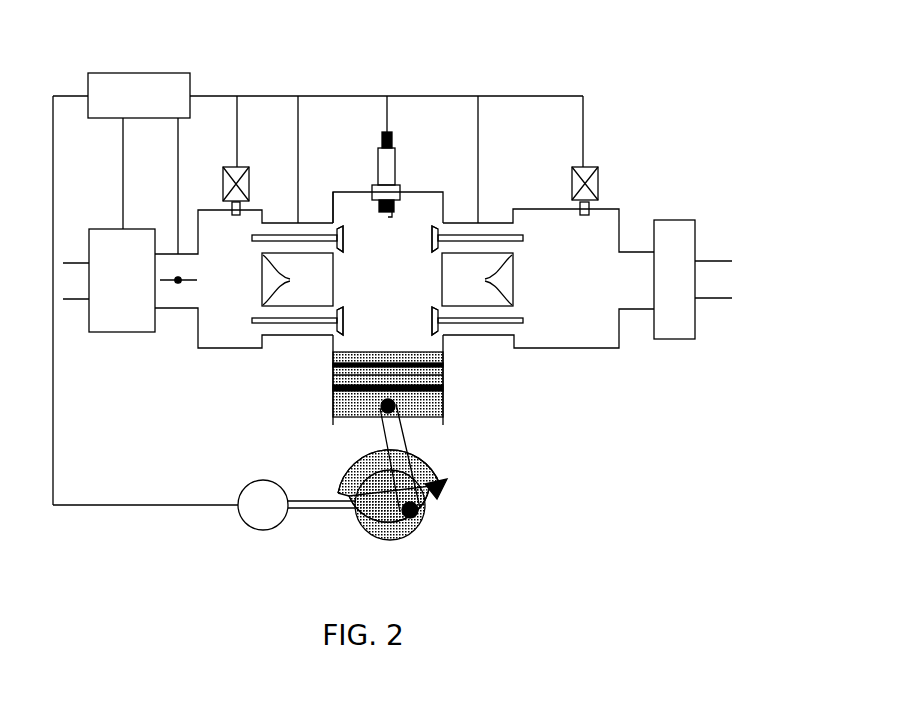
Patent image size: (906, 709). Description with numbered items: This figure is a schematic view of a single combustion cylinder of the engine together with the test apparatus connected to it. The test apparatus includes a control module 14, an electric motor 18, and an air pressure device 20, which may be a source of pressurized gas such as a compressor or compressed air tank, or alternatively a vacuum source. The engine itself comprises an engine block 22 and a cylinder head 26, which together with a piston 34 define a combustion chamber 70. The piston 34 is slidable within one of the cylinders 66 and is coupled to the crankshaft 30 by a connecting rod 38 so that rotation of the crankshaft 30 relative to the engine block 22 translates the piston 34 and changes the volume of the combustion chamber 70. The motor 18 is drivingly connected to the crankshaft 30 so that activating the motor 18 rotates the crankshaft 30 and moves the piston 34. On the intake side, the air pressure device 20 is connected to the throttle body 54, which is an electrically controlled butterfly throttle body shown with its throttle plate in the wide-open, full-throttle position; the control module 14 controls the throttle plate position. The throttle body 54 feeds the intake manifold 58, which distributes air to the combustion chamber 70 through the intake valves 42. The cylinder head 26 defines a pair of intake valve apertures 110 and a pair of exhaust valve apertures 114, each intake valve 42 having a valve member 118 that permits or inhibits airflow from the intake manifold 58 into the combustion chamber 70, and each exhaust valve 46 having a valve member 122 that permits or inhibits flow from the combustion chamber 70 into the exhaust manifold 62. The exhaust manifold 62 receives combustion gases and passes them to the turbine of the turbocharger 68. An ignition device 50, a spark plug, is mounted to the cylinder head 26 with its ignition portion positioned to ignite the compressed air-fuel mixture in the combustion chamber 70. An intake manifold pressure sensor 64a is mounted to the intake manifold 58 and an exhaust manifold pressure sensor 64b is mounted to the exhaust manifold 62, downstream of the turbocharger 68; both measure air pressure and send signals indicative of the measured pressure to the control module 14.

The control module 14 is at (138, 73).
The motor 18 is at (242, 520).
The air pressure device 20 is at (122, 333).
The engine block 22 is at (443, 420).
The cylinder head 26 is at (423, 192).
The crankshaft 30 is at (420, 520).
The piston 34 is at (430, 398).
The connecting rod 38 is at (403, 430).
The intake valve 42 is at (297, 235).
The exhaust valve 46 is at (487, 223).
The ignition device 50 is at (395, 162).
The throttle body 54 is at (185, 308).
The intake manifold 58 is at (230, 343).
The exhaust manifold 62 is at (595, 350).
The intake manifold pressure sensor 64a is at (222, 183).
The exhaust manifold pressure sensor 64b is at (590, 167).
The cylinder 66 is at (327, 197).
The turbocharger 68 is at (672, 220).
The combustion chamber 70 is at (372, 330).
The intake valve aperture 110 is at (297, 279).
The exhaust valve aperture 114 is at (477, 279).
The valve member 118 is at (341, 310).
The valve member 122 is at (426, 320).